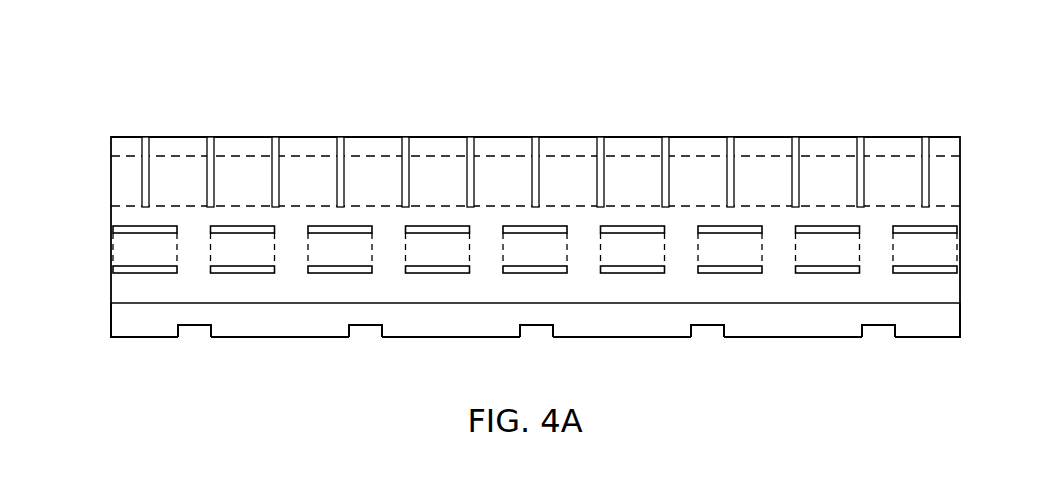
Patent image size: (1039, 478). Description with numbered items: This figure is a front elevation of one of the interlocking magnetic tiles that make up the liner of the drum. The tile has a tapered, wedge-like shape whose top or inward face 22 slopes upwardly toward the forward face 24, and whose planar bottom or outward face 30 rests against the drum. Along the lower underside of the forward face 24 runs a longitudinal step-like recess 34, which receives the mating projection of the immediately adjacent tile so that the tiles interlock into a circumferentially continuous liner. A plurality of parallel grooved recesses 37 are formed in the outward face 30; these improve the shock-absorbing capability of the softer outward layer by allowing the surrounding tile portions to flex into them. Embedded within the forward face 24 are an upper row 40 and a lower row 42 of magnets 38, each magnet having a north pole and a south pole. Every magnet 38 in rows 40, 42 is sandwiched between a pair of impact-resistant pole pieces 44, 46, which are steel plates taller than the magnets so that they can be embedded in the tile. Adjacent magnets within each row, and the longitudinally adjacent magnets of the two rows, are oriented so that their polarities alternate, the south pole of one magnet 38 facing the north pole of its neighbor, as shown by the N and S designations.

The inward face 22 is at (620, 137).
The forward face 24 is at (290, 285).
The outward face 30 is at (668, 338).
The step-like recess 34 is at (969, 318).
The grooved recesses 37 is at (196, 331).
The magnets 38 is at (228, 148).
The upper row of magnets 40 is at (942, 162).
The lower row of magnets 42 is at (969, 222).
The pole piece 44 is at (150, 137).
The pole piece 46 is at (252, 224).